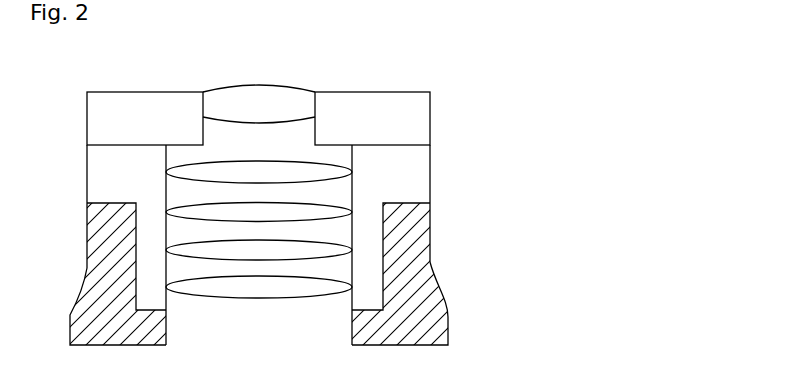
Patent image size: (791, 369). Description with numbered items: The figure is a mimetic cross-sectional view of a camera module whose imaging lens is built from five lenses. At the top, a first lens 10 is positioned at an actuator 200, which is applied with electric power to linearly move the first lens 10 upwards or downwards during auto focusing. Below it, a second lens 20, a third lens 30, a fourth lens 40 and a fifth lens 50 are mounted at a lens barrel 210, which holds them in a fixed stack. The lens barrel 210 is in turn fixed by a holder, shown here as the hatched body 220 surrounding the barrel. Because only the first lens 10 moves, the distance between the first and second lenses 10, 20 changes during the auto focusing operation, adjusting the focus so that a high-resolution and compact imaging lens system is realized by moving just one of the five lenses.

The actuator 200 is at (141, 97).
The lens barrel 210 is at (415, 170).
The holder lower part 220 is at (417, 235).
The first lens 10 is at (257, 92).
The second lens 20 is at (178, 170).
The third lens 30 is at (178, 207).
The fourth lens 40 is at (178, 246).
The fifth lens 50 is at (241, 294).